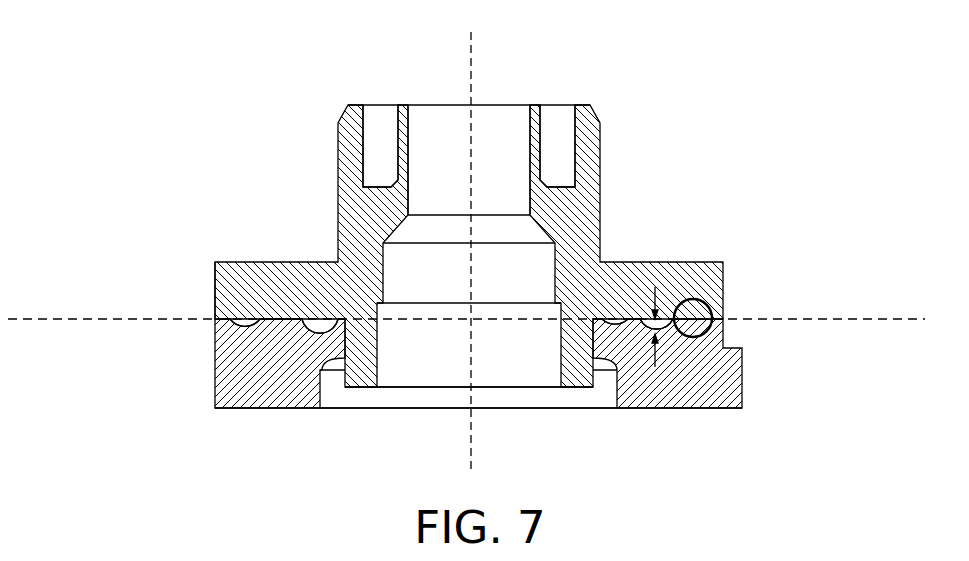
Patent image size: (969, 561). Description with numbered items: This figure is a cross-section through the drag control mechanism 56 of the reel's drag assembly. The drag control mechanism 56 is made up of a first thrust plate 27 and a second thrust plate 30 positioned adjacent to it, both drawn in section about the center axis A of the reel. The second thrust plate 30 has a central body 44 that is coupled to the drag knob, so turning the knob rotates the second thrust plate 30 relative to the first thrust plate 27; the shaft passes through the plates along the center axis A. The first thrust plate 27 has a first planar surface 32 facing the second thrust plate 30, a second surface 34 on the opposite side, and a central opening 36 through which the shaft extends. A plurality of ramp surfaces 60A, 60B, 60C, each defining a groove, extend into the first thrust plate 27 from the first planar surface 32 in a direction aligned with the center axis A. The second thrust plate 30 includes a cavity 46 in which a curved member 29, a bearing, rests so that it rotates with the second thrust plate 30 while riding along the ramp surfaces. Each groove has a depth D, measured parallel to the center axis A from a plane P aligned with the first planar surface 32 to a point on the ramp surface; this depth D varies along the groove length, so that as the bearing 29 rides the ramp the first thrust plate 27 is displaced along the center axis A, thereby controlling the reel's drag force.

The drag control mechanism 56 is at (193, 117).
The second thrust plate 30 is at (422, 246).
The first thrust plate 27 is at (460, 331).
The first planar surface 32 is at (216, 314).
The central body 44 is at (338, 210).
The cavity 46 is at (667, 317).
The curved member 29 is at (697, 316).
The second surface 34 is at (259, 409).
The central opening 36 is at (358, 400).
The ramp surface 60A is at (230, 322).
The ramp surface 60B is at (283, 319).
The ramp surface 60C is at (337, 329).
The center axis A is at (473, 71).
The plane P is at (836, 318).
The depth D is at (612, 358).